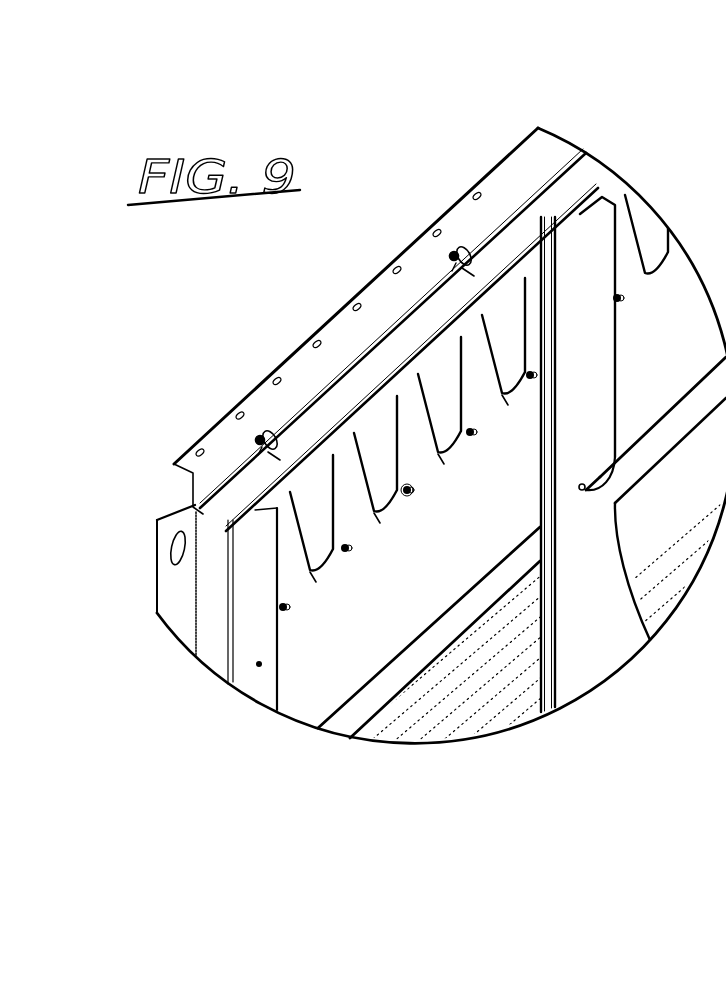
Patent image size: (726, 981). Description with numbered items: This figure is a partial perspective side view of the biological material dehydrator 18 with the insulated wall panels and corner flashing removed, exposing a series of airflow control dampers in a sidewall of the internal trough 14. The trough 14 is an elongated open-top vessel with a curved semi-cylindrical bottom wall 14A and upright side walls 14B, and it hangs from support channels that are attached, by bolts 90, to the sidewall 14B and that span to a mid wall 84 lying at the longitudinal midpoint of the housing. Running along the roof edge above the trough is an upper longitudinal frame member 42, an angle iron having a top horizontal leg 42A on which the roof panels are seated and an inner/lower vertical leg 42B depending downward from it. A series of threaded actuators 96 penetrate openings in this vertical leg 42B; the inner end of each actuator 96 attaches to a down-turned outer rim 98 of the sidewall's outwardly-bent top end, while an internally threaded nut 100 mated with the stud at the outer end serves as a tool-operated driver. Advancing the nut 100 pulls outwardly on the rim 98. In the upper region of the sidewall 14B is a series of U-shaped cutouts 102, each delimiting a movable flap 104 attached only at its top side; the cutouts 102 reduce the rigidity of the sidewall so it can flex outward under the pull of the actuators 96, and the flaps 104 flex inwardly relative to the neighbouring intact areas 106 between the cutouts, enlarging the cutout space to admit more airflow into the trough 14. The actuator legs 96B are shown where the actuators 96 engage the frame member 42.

The cargo container assembly 18 is at (441, 435).
The upper longitudinal frame member 42 is at (216, 466).
The top horizontal leg 42A is at (545, 142).
The inner/lower vertical leg 42B is at (192, 480).
The down-turned outer rim 98 is at (278, 470).
The trough 14 is at (310, 690).
The bottom wall 14A is at (484, 728).
The side wall 14B is at (480, 543).
The mid wall 84 is at (600, 385).
The movable flap 104 is at (322, 515).
The neighbouring intact area 106 is at (488, 396).
The U-shaped cutout 102 is at (322, 570).
The bolt 90 is at (406, 498).
The threaded actuator 96 is at (259, 434).
The clip leg 96B is at (258, 444).
The internally threaded nut 100 is at (266, 430).